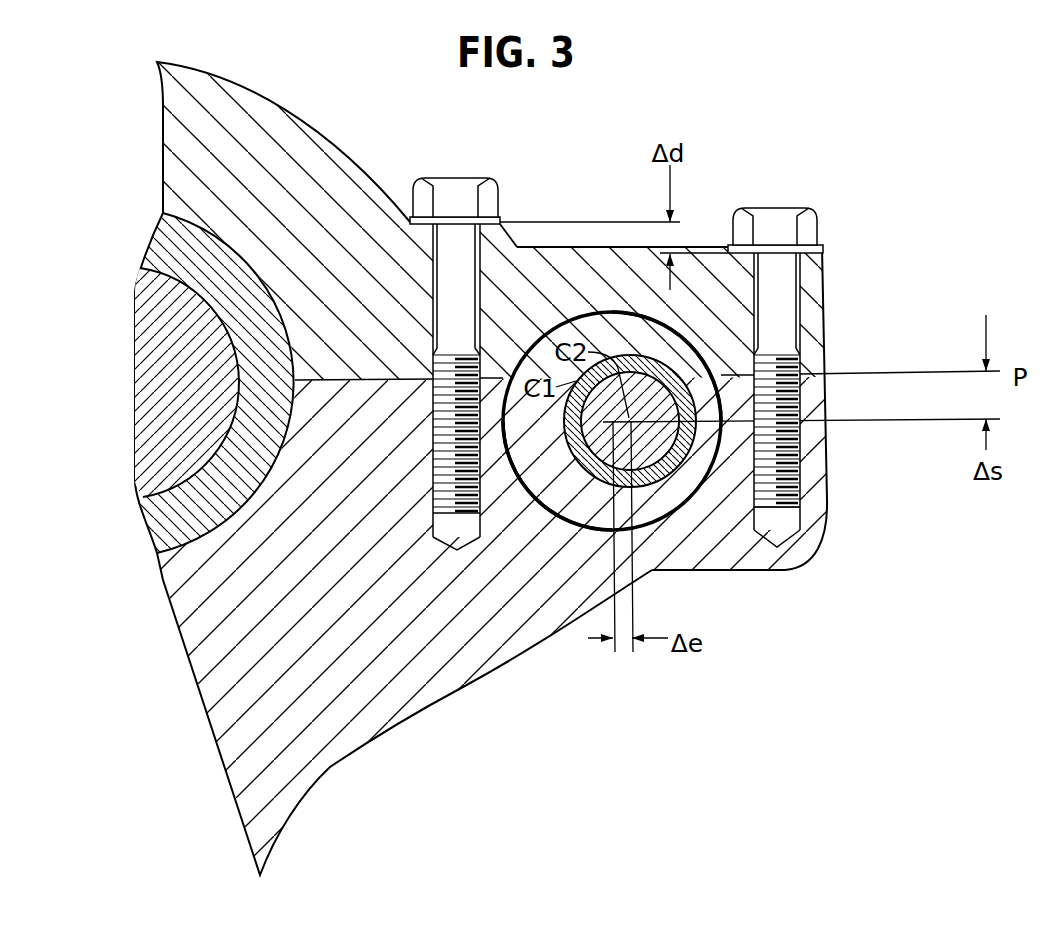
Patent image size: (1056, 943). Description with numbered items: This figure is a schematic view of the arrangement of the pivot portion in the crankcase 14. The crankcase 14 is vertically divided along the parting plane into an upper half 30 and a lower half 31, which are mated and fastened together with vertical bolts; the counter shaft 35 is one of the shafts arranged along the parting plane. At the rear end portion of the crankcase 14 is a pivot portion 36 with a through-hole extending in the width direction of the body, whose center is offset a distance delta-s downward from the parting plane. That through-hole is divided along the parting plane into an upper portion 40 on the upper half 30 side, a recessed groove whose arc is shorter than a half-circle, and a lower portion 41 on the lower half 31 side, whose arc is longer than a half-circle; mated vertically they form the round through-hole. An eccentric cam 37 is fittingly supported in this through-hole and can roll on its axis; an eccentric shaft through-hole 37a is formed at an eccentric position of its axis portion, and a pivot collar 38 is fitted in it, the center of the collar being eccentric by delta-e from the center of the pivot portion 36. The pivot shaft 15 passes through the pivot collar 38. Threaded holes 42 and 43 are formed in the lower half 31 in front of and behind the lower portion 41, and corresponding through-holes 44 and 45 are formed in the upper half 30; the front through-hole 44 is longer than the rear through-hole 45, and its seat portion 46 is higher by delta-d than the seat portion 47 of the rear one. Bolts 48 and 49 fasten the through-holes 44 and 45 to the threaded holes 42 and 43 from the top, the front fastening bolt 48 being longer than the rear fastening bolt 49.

The crankcase 14 is at (548, 673).
The pivot shaft 15 is at (604, 470).
The upper half 30 is at (823, 333).
The lower half 31 is at (830, 510).
The counter shaft 35 is at (158, 473).
The pivot portion 36 is at (605, 300).
The eccentric cam 37 is at (546, 500).
The eccentric shaft through-hole 37a is at (637, 483).
The pivot collar 38 is at (681, 473).
The upper portion 40 is at (660, 328).
The lower portion 41 is at (572, 522).
The threaded hole 42 is at (440, 500).
The threaded hole 43 is at (752, 505).
The through-hole 44 is at (438, 275).
The through-hole 45 is at (802, 295).
The seat portion 46 is at (504, 222).
The seat portion 47 is at (824, 246).
The fastening bolt 48 is at (452, 178).
The fastening bolt 49 is at (775, 208).